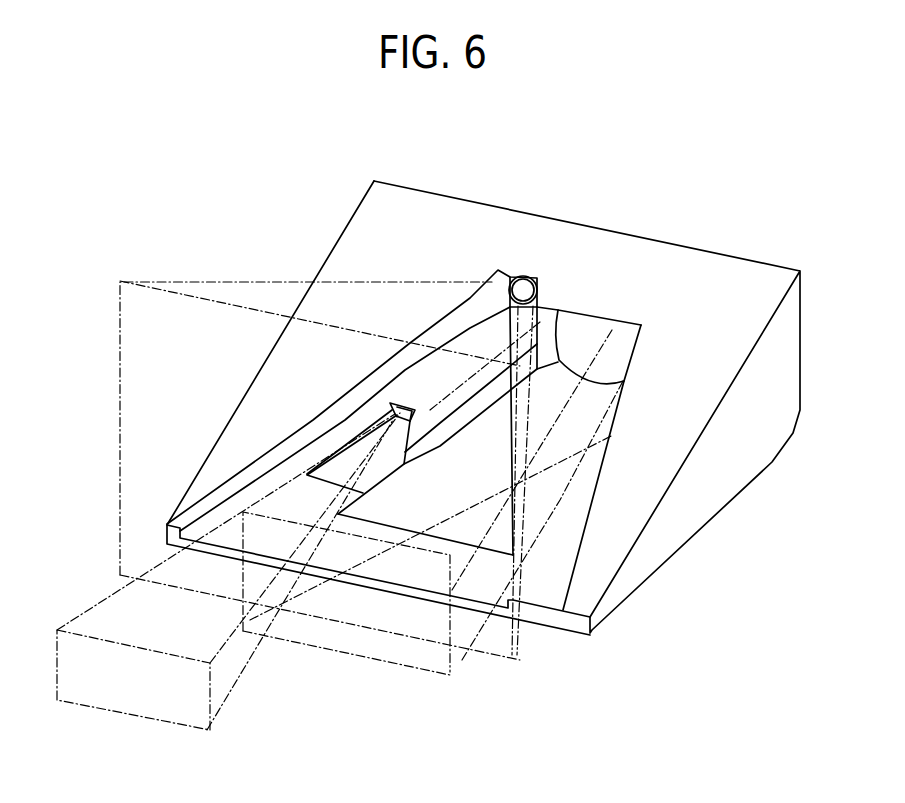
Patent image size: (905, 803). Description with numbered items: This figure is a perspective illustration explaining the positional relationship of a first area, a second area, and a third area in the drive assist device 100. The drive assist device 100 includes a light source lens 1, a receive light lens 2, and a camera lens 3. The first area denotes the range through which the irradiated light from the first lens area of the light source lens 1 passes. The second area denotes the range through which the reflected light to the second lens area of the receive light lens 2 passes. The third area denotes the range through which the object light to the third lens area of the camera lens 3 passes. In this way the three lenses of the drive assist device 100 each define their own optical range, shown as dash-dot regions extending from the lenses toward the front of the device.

The drive assist device 100 is at (484, 161).
The light source lens 1 is at (388, 406).
The receive light lens 2 is at (598, 338).
The camera lens 3 is at (523, 287).